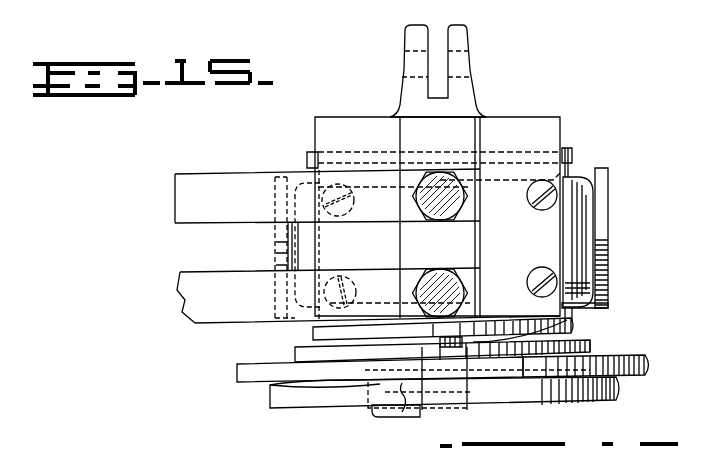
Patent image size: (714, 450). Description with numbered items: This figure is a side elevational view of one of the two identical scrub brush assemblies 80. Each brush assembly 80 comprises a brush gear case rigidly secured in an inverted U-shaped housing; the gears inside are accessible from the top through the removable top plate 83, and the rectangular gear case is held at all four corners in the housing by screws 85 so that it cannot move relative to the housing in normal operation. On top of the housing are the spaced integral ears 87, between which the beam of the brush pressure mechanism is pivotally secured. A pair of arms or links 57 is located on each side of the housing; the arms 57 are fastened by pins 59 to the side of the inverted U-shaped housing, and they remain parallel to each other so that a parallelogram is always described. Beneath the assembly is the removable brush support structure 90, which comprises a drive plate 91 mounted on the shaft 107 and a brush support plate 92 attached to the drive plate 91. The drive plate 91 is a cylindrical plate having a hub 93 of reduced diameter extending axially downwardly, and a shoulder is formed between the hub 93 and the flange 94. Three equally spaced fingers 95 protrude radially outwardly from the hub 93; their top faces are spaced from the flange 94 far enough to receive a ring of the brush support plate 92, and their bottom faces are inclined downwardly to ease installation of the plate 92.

The arms or links 57 is at (220, 185).
The pins 59 is at (452, 206).
The brush assembly 80 is at (573, 156).
The removable top plate 83 is at (566, 150).
The screws 85 is at (536, 268).
The spaced integral ears 87 is at (462, 42).
The removable brush support structure 90 is at (612, 348).
The drive plate 91 is at (592, 348).
The brush support plate 92 is at (622, 397).
The hub 93 is at (528, 399).
The flange 94 is at (263, 372).
The fingers 95 is at (405, 412).
The shaft 107 is at (573, 326).